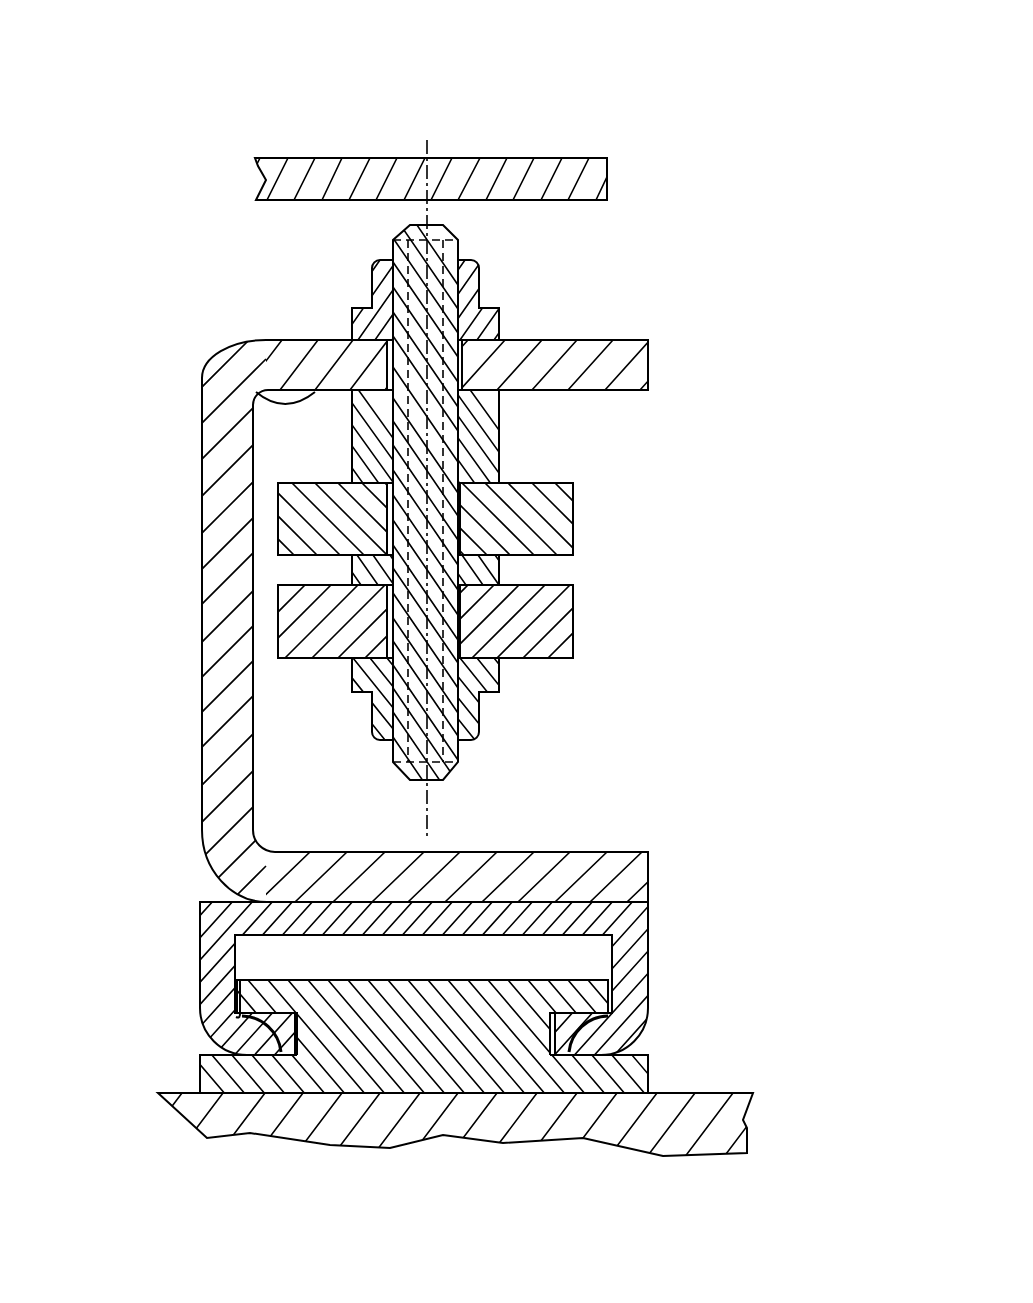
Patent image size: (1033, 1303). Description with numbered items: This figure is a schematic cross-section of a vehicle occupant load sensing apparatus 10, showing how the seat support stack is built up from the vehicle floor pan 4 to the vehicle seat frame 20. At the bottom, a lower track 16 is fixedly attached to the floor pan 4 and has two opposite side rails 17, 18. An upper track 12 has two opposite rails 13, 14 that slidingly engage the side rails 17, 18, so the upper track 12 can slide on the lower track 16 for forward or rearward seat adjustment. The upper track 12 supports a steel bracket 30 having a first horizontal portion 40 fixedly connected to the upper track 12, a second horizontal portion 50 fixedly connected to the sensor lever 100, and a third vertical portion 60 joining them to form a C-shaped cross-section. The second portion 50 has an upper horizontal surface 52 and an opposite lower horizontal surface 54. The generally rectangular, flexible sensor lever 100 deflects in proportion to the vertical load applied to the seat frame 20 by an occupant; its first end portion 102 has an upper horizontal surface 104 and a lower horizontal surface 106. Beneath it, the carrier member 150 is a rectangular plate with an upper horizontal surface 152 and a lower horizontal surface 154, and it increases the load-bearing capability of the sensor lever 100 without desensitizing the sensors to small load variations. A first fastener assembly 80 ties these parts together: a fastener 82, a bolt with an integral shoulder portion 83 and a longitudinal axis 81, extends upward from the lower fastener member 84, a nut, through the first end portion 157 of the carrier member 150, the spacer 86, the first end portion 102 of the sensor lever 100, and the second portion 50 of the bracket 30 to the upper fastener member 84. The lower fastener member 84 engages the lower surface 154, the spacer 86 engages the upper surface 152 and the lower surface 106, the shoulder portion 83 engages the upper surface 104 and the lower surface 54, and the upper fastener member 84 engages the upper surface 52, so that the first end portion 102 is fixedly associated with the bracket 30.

The vehicle floor pan 4 is at (185, 1088).
The vehicle occupant load sensing apparatus 10 is at (607, 97).
The upper track 12 is at (668, 950).
The rail 13 is at (255, 1033).
The rail 14 is at (590, 1033).
The lower track 16 is at (655, 1078).
The side rail 17 is at (257, 998).
The side rail 18 is at (595, 1003).
The vehicle seat frame 20 is at (340, 158).
The bracket 30 is at (617, 320).
The first horizontal portion 40 is at (627, 883).
The second horizontal portion 50 is at (609, 367).
The upper horizontal surface 52 is at (305, 340).
The lower horizontal surface 54 is at (256, 393).
The third vertical portion 60 is at (227, 668).
The first fastener assembly 80 is at (333, 277).
The longitudinal axis 81 is at (427, 810).
The fastener 82 is at (458, 762).
The integral shoulder portion 83 is at (498, 440).
The upper and lower fastener members 84 is at (478, 278).
The spacer 86 is at (500, 567).
The sensor lever 100 is at (600, 502).
The first end portion 102 is at (550, 530).
The upper horizontal surface 104 is at (297, 483).
The lower horizontal surface 106 is at (300, 557).
The carrier member 150 is at (585, 636).
The upper horizontal surface 152 is at (285, 588).
The lower horizontal surface 154 is at (298, 660).
The first end portion 157 is at (530, 613).